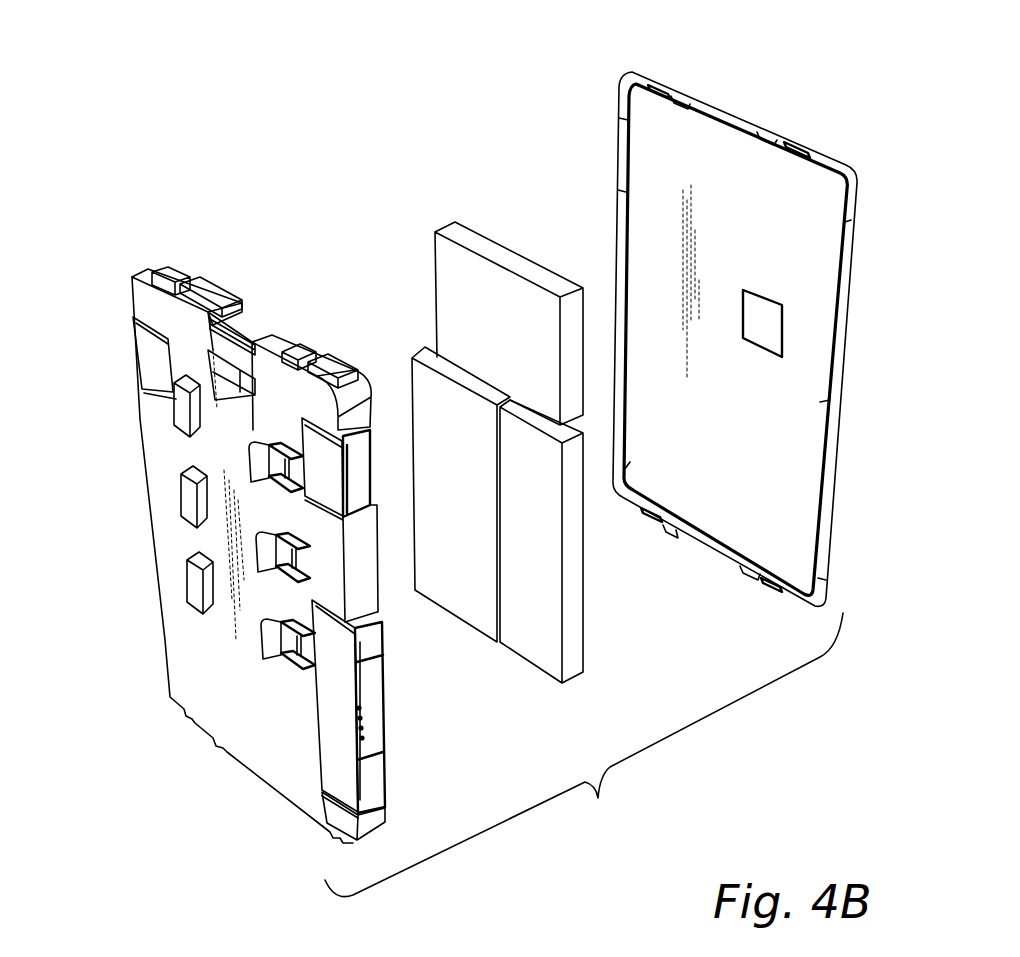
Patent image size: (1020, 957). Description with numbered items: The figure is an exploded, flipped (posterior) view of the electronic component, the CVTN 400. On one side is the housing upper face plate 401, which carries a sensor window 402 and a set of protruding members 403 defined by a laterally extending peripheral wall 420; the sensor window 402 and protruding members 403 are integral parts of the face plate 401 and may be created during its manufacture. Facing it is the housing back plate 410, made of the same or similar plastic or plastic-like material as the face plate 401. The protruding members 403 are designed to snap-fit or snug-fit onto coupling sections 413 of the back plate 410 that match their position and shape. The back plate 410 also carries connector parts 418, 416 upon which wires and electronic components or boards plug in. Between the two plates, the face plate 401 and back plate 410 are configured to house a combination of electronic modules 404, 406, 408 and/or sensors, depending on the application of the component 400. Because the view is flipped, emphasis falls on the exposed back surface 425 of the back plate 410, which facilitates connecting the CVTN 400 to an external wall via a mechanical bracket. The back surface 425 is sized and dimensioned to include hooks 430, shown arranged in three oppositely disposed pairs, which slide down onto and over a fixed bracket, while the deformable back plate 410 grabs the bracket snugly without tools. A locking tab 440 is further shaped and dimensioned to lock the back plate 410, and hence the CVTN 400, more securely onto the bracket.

The CVTN 400 is at (584, 755).
The housing upper face plate 401 is at (775, 60).
The sensor window 402 is at (763, 327).
The protruding members 403 is at (845, 127).
The electronic module 404 is at (524, 348).
The electronic module 406 is at (552, 554).
The electronic module 408 is at (474, 501).
The housing back plate 410 is at (120, 267).
The coupling sections 413 is at (163, 277).
The connector part 416 is at (332, 758).
The connector part 418 is at (150, 355).
The laterally extending peripheral wall 420 is at (842, 346).
The back surface 425 is at (232, 702).
The hooks 430 is at (183, 413).
The locking tab 440 is at (230, 357).